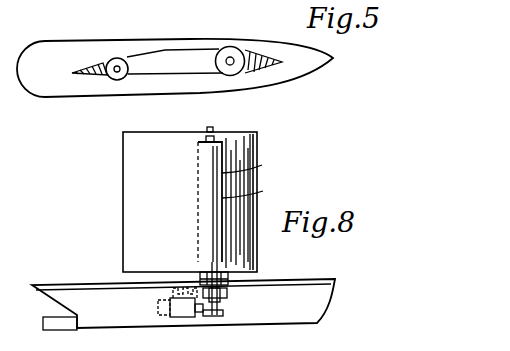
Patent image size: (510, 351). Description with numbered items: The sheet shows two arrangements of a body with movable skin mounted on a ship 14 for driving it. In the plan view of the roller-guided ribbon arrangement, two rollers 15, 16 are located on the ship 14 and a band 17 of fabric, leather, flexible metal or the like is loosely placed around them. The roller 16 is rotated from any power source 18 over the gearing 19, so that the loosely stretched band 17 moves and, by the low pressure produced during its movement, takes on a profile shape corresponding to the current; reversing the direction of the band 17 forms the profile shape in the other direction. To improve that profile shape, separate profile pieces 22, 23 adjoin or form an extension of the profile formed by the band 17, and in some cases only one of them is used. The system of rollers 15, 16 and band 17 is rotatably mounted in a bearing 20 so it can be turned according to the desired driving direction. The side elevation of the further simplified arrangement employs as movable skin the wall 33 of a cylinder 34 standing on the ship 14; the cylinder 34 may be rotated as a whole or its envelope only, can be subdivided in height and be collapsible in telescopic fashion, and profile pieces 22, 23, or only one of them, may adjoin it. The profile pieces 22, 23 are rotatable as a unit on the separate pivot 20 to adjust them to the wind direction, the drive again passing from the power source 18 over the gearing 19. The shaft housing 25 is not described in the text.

In FIG. 5, the ship 14 is at (175, 68).
In FIG. 8, the ship 14 is at (123, 323).
In FIG. 5, the roller 15 is at (113, 61).
In FIG. 5, the roller 16 is at (228, 50).
In FIG. 5, the band 17 is at (187, 48).
In FIG. 5, the profile piece 22 is at (90, 75).
In FIG. 8, the profile piece 22 is at (190, 202).
In FIG. 5, the profile piece 23 is at (262, 70).
In FIG. 8, the shaft housing 25 is at (225, 194).
In FIG. 8, the wall 33 is at (250, 165).
In FIG. 8, the cylinder 34 is at (251, 192).
In FIG. 8, the bearing 20 is at (229, 281).
In FIG. 8, the gearing 19 is at (221, 314).
In FIG. 8, the power source 18 is at (193, 312).